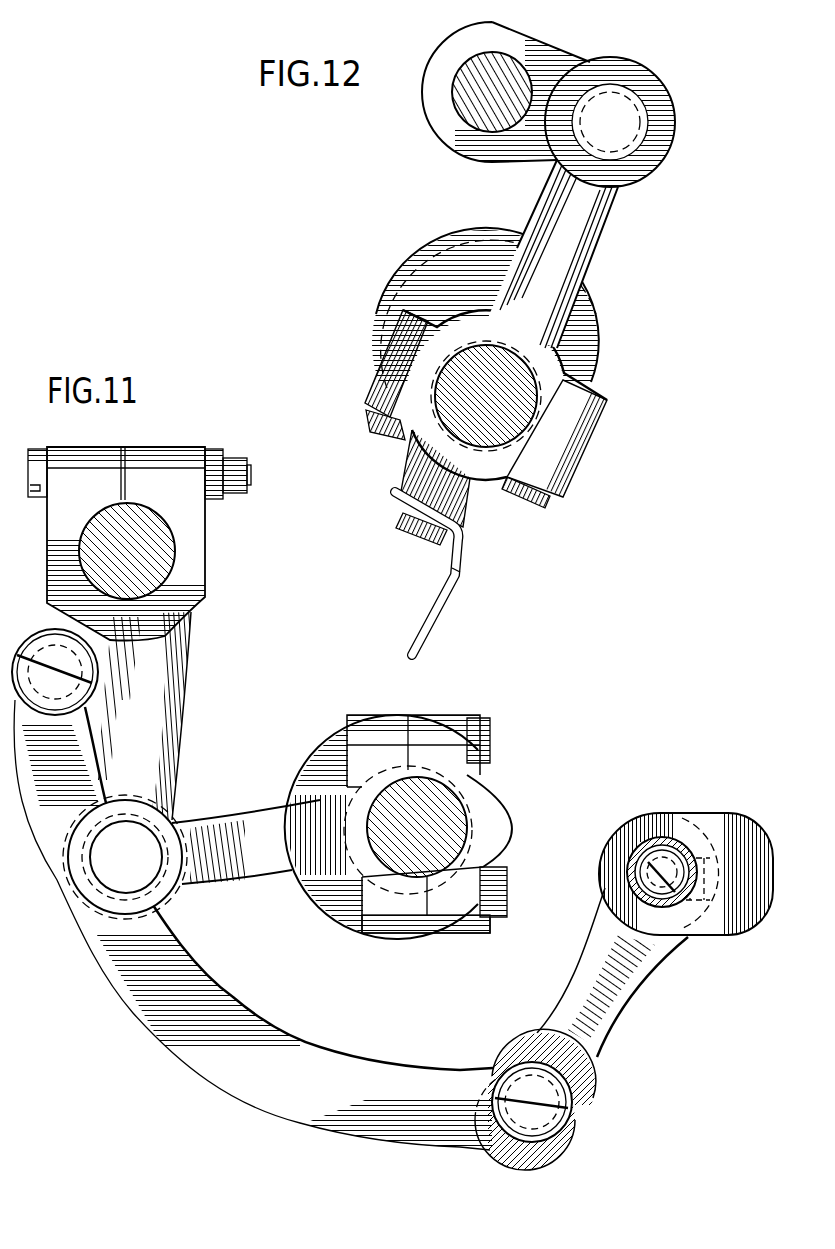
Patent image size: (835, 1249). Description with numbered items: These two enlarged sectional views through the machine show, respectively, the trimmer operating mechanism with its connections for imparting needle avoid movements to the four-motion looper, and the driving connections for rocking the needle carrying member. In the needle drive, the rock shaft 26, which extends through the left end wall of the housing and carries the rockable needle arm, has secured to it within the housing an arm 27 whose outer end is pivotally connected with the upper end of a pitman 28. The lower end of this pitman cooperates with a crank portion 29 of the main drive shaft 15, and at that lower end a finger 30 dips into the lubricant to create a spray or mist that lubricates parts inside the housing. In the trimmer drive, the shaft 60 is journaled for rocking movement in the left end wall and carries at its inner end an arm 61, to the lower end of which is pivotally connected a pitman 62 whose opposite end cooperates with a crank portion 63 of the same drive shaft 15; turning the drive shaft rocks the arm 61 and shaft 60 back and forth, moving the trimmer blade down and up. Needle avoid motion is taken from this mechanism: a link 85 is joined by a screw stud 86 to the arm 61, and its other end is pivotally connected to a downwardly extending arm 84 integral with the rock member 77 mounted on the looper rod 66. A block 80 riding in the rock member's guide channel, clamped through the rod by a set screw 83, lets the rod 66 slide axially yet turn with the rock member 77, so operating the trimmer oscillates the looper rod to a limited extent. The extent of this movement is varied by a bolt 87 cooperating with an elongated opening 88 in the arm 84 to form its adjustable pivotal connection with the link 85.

In FIG. 12, the main drive shaft 15 is at (447, 308).
In FIG. 11, the main drive shaft 15 is at (377, 885).
In FIG. 12, the rock shaft 26 is at (483, 102).
In FIG. 12, the arm 27 is at (515, 155).
In FIG. 12, the pitman 28 is at (595, 232).
In FIG. 12, the crank portion 29 is at (490, 412).
In FIG. 12, the finger 30 is at (437, 598).
In FIG. 11, the shaft 60 is at (155, 552).
In FIG. 11, the arm 61 is at (163, 653).
In FIG. 11, the pitman 62 is at (233, 830).
In FIG. 11, the crank portion 63 is at (462, 812).
In FIG. 11, the rod 66 is at (648, 840).
In FIG. 11, the rock member 77 is at (708, 815).
In FIG. 11, the block 80 is at (750, 925).
In FIG. 11, the set screw 83 is at (662, 893).
In FIG. 11, the arm 84 is at (612, 1000).
In FIG. 11, the link 85 is at (307, 1050).
In FIG. 11, the screw stud 86 is at (83, 668).
In FIG. 11, the bolt 87 is at (563, 1122).
In FIG. 11, the elongated opening 88 is at (547, 1052).